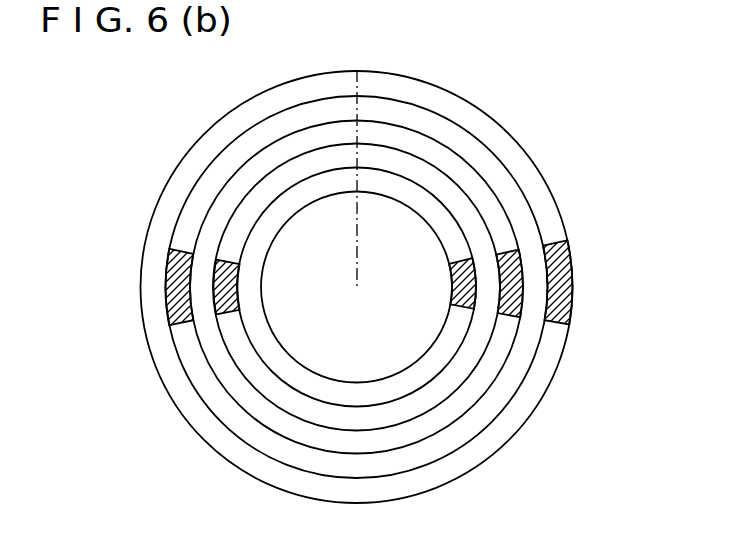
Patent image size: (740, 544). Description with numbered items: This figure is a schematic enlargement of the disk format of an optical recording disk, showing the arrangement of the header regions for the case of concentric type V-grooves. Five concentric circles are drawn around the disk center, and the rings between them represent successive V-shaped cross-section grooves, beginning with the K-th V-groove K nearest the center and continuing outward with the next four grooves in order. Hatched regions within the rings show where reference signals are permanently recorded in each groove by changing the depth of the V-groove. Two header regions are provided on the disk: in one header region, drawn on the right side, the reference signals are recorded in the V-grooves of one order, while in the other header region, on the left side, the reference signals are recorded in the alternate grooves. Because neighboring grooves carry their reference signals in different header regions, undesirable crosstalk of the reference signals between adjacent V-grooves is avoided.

The K-th V-groove K is at (356, 287).